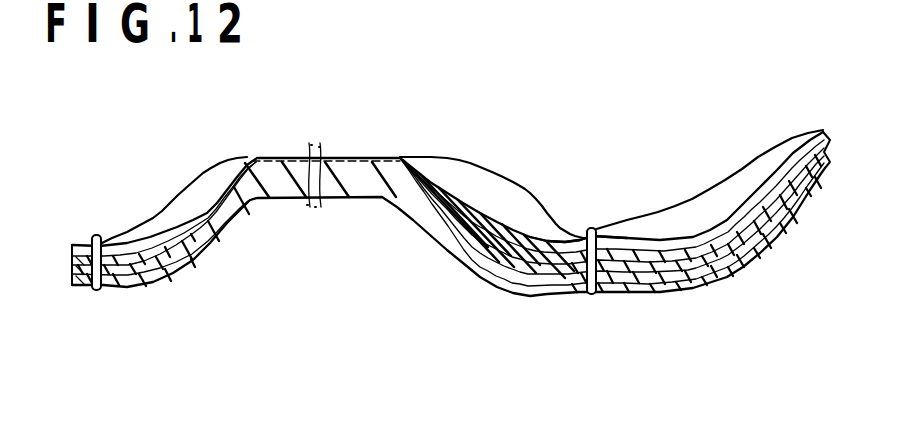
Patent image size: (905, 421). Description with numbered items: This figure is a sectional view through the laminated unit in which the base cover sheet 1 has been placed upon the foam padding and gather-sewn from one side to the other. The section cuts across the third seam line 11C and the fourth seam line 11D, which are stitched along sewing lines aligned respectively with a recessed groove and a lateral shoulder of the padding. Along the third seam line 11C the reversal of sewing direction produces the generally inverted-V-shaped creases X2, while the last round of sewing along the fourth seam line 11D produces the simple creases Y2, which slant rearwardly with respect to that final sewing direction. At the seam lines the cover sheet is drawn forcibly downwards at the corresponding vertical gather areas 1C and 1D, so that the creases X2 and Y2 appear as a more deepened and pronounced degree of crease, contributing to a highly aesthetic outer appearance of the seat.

The base cover sheet 1 is at (305, 156).
The vertical gather area 1D is at (98, 204).
The vertical gather area 1C is at (592, 203).
The creases Y2 is at (181, 165).
The inverted-V-shaped creases X2 is at (513, 190).
The fourth seam line 11D is at (97, 292).
The third seam line 11C is at (592, 296).